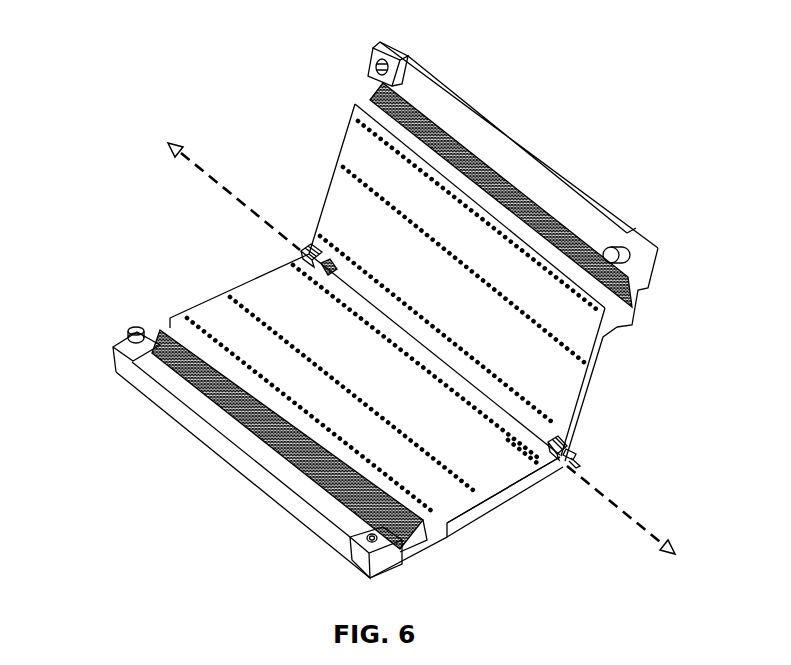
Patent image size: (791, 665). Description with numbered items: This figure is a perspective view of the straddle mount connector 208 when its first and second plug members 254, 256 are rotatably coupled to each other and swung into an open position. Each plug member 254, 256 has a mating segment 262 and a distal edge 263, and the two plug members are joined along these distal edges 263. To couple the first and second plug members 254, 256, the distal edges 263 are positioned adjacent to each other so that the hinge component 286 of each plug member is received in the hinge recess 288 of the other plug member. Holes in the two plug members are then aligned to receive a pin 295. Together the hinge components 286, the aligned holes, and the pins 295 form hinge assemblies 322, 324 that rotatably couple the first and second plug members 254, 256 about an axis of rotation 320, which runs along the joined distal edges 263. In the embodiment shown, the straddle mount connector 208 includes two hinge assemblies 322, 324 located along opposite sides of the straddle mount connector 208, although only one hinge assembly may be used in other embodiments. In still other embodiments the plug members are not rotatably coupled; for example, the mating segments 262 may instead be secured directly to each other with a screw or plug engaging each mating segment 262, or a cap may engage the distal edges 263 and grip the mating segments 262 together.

The straddle mount connector 208 is at (149, 48).
The first plug member 254 is at (600, 120).
The second plug member 256 is at (184, 487).
The mating segment 262 is at (600, 364).
The distal edge 263 is at (570, 450).
The hinge component 286 is at (308, 246).
The hinge recess 288 is at (292, 255).
The pin 295 is at (560, 463).
The axis of rotation 320 is at (438, 348).
The hinge assembly 322 is at (302, 280).
The hinge assembly 324 is at (518, 452).